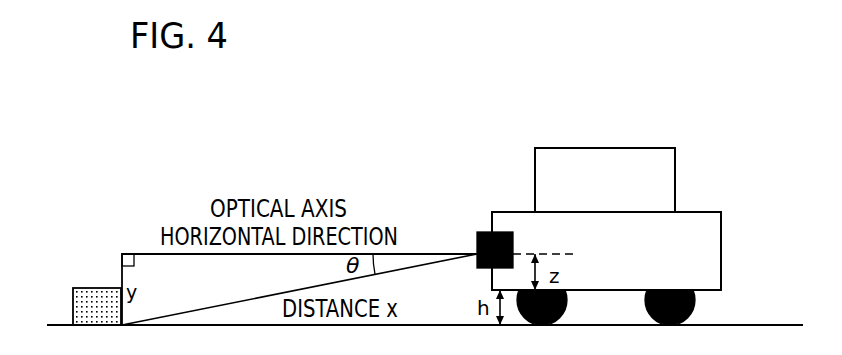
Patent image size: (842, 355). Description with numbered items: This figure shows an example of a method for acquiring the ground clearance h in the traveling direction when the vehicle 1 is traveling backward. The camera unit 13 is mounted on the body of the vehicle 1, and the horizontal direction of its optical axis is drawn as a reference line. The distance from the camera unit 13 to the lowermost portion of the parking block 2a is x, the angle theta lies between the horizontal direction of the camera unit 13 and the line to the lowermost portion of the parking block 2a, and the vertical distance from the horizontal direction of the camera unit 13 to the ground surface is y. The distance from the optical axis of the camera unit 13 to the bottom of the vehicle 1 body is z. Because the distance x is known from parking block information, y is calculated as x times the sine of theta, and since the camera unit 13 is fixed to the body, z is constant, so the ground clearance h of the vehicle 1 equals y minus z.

The vehicle 1 is at (655, 148).
The parking block 2a is at (84, 288).
The camera unit 13 is at (478, 232).